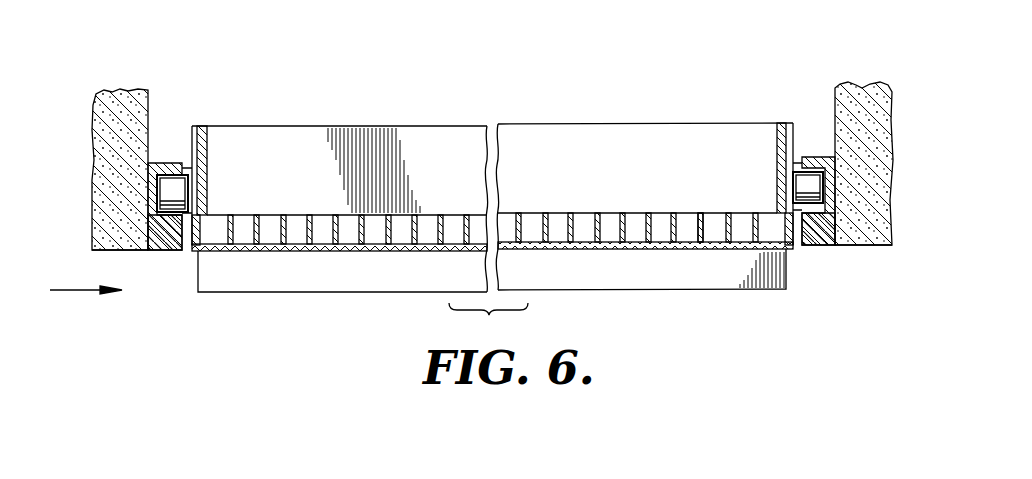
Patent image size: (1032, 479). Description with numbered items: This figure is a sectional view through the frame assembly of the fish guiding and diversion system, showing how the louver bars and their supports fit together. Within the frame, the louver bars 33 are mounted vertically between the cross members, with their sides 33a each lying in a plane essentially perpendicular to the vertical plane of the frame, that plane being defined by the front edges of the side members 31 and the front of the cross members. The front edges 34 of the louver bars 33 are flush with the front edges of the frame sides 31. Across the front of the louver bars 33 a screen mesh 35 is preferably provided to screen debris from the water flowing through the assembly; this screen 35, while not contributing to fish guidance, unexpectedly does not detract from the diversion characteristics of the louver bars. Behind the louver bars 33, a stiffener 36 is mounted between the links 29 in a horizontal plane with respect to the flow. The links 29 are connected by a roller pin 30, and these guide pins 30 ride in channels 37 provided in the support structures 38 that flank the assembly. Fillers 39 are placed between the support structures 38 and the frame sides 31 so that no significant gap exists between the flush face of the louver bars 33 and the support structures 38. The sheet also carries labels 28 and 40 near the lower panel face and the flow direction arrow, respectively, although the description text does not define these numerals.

The panel 28 is at (772, 273).
The link 29 is at (200, 124).
The roller pin 30 is at (170, 183).
The side member 31 is at (798, 226).
The louver bar 33 is at (622, 213).
The side of louver bar 33a is at (690, 213).
The front edge of louver bar 34 is at (662, 232).
The screen mesh 35 is at (318, 252).
The stiffener 36 is at (268, 132).
The channel 37 is at (150, 184).
The support structure 38 is at (120, 94).
The filler 39 is at (169, 249).
The direction of assembly 40 is at (102, 251).